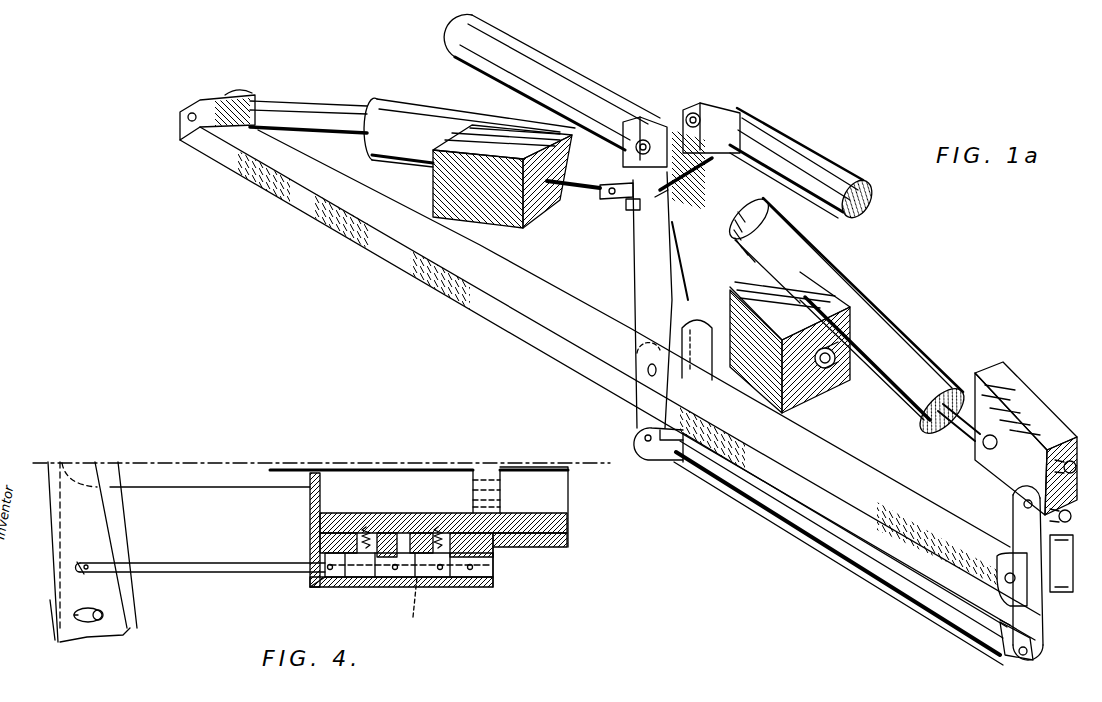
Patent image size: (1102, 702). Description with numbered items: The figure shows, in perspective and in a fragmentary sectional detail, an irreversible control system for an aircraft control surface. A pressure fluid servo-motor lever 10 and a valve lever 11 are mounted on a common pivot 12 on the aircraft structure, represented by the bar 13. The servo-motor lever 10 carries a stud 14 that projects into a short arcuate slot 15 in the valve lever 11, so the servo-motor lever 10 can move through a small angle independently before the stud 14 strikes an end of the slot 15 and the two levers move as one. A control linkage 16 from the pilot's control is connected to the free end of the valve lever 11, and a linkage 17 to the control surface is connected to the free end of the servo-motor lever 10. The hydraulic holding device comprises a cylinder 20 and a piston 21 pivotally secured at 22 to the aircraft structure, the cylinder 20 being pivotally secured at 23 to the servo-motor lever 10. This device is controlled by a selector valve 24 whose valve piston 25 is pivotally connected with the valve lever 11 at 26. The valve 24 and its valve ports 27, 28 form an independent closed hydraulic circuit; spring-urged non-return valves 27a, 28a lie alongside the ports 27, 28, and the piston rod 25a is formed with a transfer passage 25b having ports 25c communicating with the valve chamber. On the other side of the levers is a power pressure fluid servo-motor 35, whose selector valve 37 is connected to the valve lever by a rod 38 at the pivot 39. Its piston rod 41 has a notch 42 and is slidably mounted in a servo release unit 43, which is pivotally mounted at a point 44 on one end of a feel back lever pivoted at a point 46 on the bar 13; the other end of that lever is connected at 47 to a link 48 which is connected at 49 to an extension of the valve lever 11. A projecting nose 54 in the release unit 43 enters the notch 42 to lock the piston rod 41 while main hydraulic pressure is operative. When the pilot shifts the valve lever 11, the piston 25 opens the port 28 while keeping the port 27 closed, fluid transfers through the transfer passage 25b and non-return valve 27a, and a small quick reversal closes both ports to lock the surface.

In FIG. 1A, the pressure fluid servo-motor lever 10 is at (650, 317).
In FIG. 4, the pressure fluid servo-motor lever 10 is at (113, 510).
In FIG. 1A, the valve lever 11 is at (683, 293).
In FIG. 4, the valve lever 11 is at (70, 578).
In FIG. 1A, the common pivot 12 is at (647, 370).
In FIG. 1A, the bar 13 is at (298, 177).
In FIG. 1A, the stud 14 is at (684, 157).
In FIG. 4, the stud 14 is at (103, 613).
In FIG. 1A, the arcuate slot 15 is at (627, 200).
In FIG. 4, the arcuate slot 15 is at (73, 617).
In FIG. 1A, the control linkage 16 is at (545, 72).
In FIG. 1A, the linkage 17 is at (790, 157).
In FIG. 1A, the cylinder 20 is at (415, 118).
In FIG. 4, the cylinder 20 is at (567, 530).
In FIG. 4, the piston 21 is at (480, 483).
In FIG. 1A, the pivot 22 is at (190, 112).
In FIG. 1A, the pivot 23 is at (677, 153).
In FIG. 1A, the selector valve 24 is at (433, 193).
In FIG. 4, the selector valve 24 is at (358, 590).
In FIG. 4, the valve piston 25 is at (393, 577).
In FIG. 1A, the piston rod 25a is at (590, 190).
In FIG. 4, the piston rod 25a is at (210, 573).
In FIG. 4, the transfer passage 25b is at (429, 602).
In FIG. 4, the ports 25c is at (310, 547).
In FIG. 1A, the pivot 26 is at (623, 190).
In FIG. 4, the pivot 26 is at (87, 562).
In FIG. 4, the valve port 27 is at (390, 543).
In FIG. 4, the spring-urged non-return valve 27a is at (360, 527).
In FIG. 4, the valve port 28 is at (440, 533).
In FIG. 4, the spring-urged non-return valve 28a is at (487, 553).
In FIG. 1A, the power pressure fluid servo-motor 35 is at (890, 353).
In FIG. 1A, the selector valve 37 is at (847, 307).
In FIG. 1A, the rod 38 is at (800, 232).
In FIG. 1A, the pivot 39 is at (685, 295).
In FIG. 1A, the piston rod 41 is at (960, 438).
In FIG. 1A, the notch 42 is at (983, 463).
In FIG. 1A, the servo release unit 43 is at (1007, 380).
In FIG. 1A, the pivot point 44 is at (1024, 504).
In FIG. 1A, the pivot point 46 is at (1000, 566).
In FIG. 1A, the connection 47 is at (1019, 653).
In FIG. 1A, the link 48 is at (780, 507).
In FIG. 1A, the connection 49 is at (640, 432).
In FIG. 1A, the projecting nose 54 is at (1003, 447).